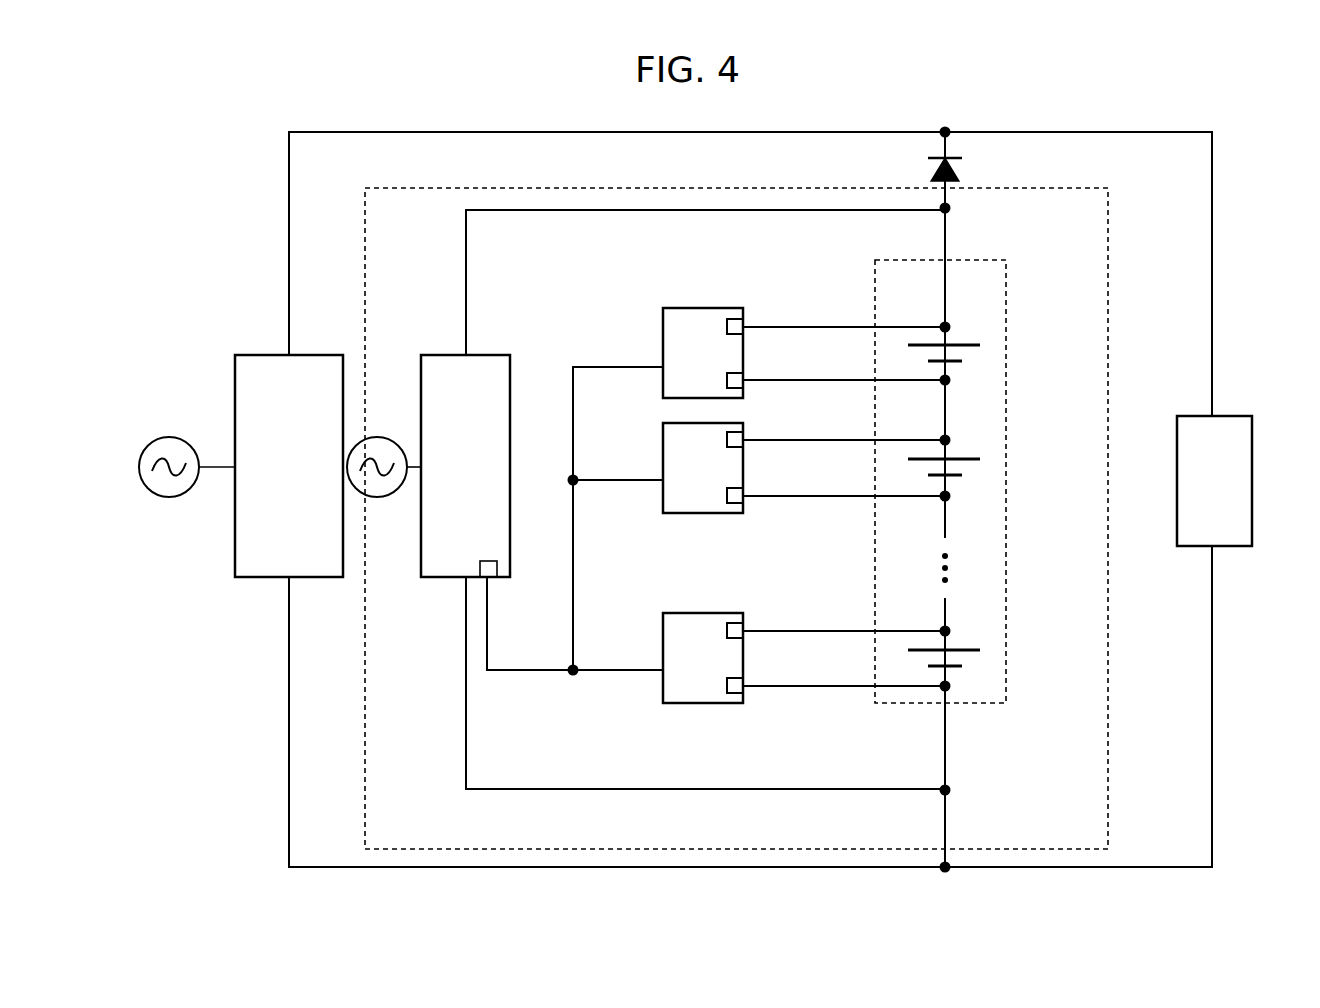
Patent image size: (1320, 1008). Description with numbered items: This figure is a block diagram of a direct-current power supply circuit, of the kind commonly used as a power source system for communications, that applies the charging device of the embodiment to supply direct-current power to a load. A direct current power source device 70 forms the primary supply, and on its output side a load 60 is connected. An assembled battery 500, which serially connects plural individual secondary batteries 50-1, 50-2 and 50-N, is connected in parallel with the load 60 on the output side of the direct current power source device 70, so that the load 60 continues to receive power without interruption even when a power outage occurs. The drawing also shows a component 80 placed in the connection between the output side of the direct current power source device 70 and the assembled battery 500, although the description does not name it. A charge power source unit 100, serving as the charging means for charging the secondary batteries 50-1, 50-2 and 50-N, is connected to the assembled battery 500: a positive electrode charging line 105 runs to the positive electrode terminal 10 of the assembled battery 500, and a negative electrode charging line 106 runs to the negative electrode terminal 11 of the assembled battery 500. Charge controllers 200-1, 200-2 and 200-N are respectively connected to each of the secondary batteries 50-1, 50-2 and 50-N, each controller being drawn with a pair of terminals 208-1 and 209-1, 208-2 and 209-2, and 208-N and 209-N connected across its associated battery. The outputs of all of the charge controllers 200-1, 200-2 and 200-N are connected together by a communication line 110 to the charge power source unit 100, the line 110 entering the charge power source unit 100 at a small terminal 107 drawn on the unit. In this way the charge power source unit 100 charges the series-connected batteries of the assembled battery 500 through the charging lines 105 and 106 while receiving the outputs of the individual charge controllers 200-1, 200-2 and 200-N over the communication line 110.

The direct current power source device 70 is at (262, 355).
The charge power source unit 100 is at (447, 355).
The output terminal of charge power source unit 107 is at (489, 569).
The communication line 110 is at (538, 672).
The positive electrode charging line 105 is at (662, 212).
The negative electrode charging line 106 is at (630, 791).
The diode 80 is at (962, 168).
The positive electrode terminal 10 is at (950, 212).
The negative electrode terminal 11 is at (950, 793).
The assembled battery 500 is at (1008, 290).
The secondary battery 50-1 is at (965, 360).
The secondary battery 50-2 is at (965, 474).
The secondary battery 50-N is at (965, 665).
The charge controller 200-1 is at (660, 320).
The charge controller 200-2 is at (703, 513).
The charge controller 200-N is at (703, 703).
The positive output terminal 208-1 is at (737, 326).
The positive output terminal 208-2 is at (737, 439).
The positive output terminal 208-N is at (737, 630).
The negative output terminal 209-1 is at (737, 379).
The negative output terminal 209-2 is at (737, 495).
The negative output terminal 209-N is at (737, 685).
The load 60 is at (1235, 416).